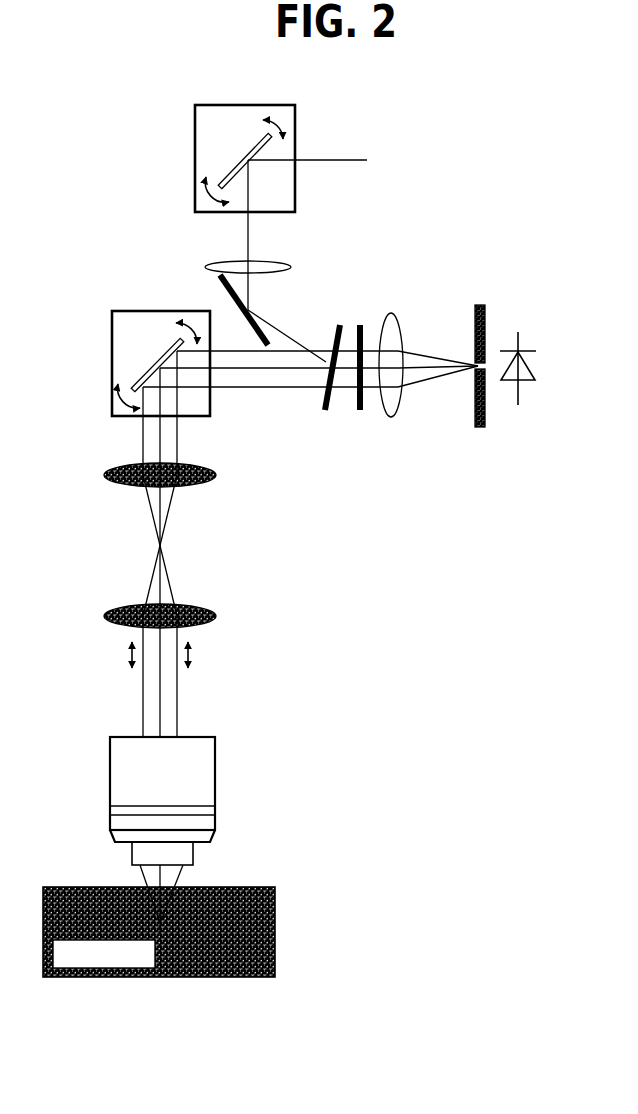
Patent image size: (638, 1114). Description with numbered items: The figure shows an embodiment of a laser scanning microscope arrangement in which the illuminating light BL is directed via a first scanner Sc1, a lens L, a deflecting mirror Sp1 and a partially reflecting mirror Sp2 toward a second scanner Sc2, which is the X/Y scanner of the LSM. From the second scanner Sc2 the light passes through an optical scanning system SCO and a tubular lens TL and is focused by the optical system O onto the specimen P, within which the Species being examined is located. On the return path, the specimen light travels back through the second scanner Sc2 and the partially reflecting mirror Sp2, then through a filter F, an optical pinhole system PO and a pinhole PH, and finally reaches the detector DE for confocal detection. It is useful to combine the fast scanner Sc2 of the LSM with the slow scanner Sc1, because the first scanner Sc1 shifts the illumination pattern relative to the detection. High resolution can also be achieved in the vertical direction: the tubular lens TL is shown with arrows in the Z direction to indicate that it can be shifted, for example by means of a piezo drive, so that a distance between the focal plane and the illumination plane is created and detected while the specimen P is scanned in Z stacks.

The first scanner Sc1 is at (245, 143).
The second scanner Sc2 is at (128, 347).
The illuminating light BL is at (307, 222).
The lens L is at (261, 253).
The deflecting mirror Sp1 is at (273, 318).
The partially reflecting mirror Sp2 is at (344, 386).
The filter F is at (366, 316).
The optical pinhole system PO is at (415, 373).
The pinhole PH is at (492, 351).
The detector DE is at (524, 385).
The optical scanning system SCO is at (124, 474).
The tubular lens TL is at (136, 619).
The Z-direction Z is at (174, 669).
The optical system O is at (251, 834).
The specimen P is at (180, 932).
The species in sample Species is at (104, 954).